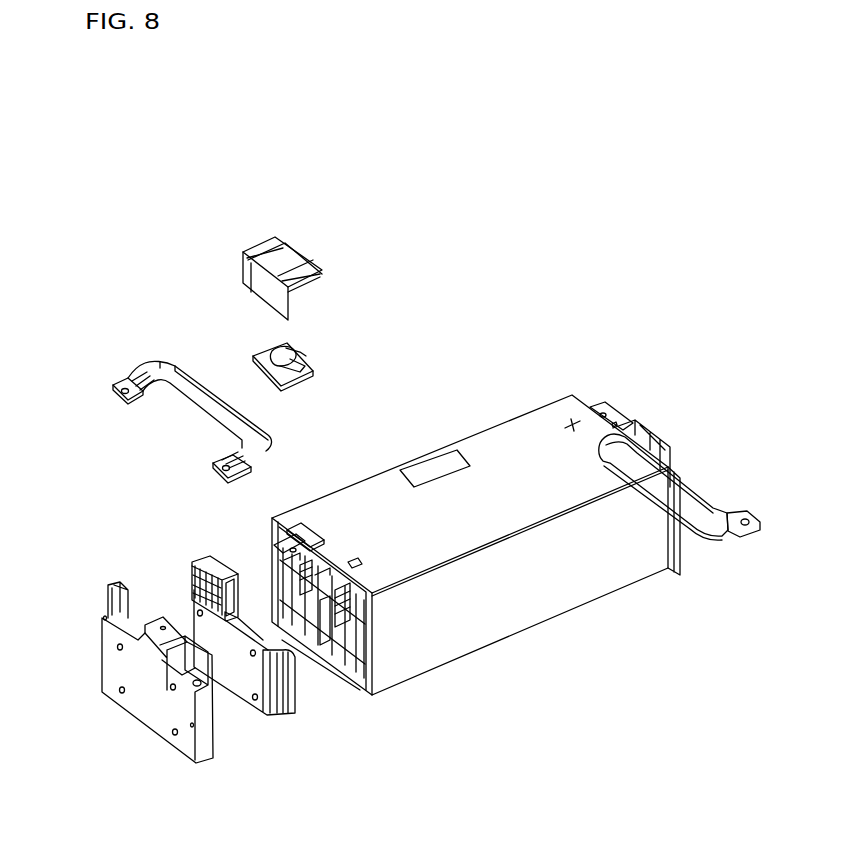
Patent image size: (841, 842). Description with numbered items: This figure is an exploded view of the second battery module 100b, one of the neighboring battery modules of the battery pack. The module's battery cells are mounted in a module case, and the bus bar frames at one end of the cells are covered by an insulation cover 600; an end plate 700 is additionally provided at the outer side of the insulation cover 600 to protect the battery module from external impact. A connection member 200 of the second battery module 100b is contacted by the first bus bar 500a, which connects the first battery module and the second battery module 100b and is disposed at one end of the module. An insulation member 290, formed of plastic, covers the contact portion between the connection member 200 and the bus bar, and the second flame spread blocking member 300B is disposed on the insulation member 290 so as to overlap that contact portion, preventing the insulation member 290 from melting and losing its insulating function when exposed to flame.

The second flame spread blocking member 300B is at (265, 247).
The first bus bar 500a is at (165, 368).
The insulation member 290 is at (313, 368).
The second battery module 100b is at (530, 425).
The connection member 200 is at (272, 546).
The insulation cover 600 is at (250, 695).
The end plate 700 is at (148, 718).